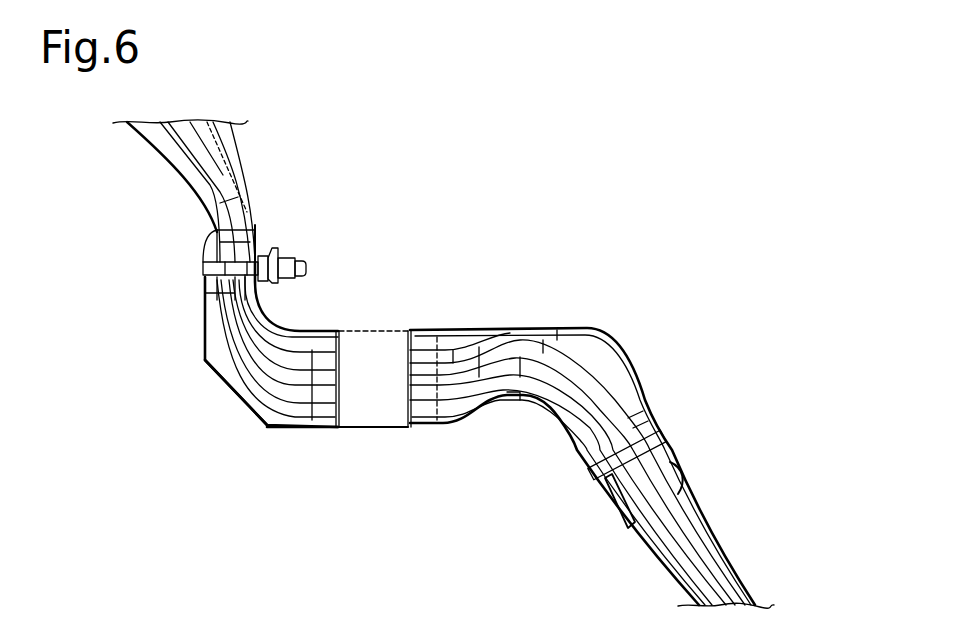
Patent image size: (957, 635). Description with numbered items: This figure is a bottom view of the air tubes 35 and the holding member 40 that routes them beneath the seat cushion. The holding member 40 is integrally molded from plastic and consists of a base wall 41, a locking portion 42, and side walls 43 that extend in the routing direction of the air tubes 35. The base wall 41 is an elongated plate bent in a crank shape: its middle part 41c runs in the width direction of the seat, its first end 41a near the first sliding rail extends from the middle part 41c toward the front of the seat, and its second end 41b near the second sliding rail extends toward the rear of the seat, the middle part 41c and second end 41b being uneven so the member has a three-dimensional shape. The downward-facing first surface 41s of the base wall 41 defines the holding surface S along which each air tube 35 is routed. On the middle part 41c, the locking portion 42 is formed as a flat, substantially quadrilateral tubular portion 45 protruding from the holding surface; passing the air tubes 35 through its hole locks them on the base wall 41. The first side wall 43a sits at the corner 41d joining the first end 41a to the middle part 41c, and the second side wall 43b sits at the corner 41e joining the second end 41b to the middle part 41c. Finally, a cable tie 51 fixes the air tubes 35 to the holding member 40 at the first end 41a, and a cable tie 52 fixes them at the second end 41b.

The air tube 35 is at (505, 338).
The holding member 40 is at (210, 352).
The base wall 41 is at (216, 381).
The first end 41a is at (212, 243).
The second end 41b is at (681, 477).
The middle part 41c is at (322, 428).
The corner 41d is at (291, 299).
The corner 41e is at (557, 500).
The first surface 41s is at (248, 392).
The locking portion 42 is at (397, 406).
The side walls 43 is at (475, 421).
The first side wall 43a is at (291, 299).
The second side wall 43b is at (557, 500).
The tubular portion 45 is at (380, 428).
The cable tie 51 is at (203, 266).
The cable tie 52 is at (665, 424).